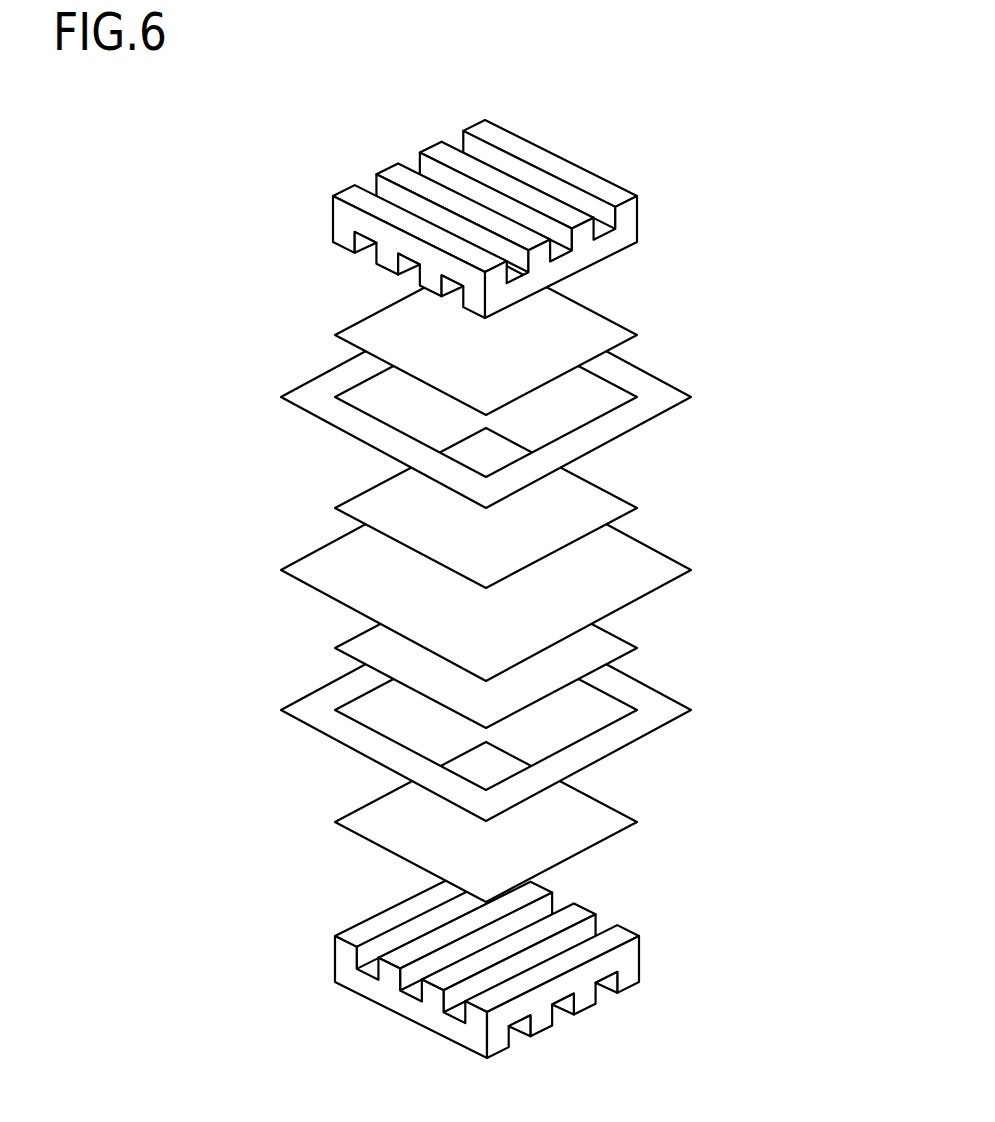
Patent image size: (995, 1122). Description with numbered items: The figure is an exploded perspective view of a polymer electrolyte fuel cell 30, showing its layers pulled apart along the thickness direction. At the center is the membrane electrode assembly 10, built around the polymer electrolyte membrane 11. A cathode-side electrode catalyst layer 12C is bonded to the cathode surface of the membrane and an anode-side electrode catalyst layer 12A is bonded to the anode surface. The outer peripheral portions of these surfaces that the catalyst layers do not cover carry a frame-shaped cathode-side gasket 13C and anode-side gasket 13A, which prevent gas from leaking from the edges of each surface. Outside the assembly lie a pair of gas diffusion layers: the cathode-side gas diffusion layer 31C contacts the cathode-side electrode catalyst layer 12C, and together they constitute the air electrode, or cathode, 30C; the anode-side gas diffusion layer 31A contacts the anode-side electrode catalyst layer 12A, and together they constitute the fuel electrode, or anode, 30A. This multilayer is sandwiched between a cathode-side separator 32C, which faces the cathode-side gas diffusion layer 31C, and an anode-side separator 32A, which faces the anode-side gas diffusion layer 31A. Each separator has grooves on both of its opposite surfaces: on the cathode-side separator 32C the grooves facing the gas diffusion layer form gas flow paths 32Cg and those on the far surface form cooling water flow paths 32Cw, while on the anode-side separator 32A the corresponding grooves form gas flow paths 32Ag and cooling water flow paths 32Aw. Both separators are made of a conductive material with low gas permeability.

The membrane electrode assembly 10 is at (481, 553).
The polymer electrolyte membrane 11 is at (673, 560).
The cathode-side electrode catalyst layer 12C is at (638, 508).
The anode-side electrode catalyst layer 12A is at (638, 648).
The cathode-side gasket 13C is at (306, 412).
The anode-side gasket 13A is at (306, 725).
The polymer electrolyte fuel cell 30 is at (515, 566).
The air electrode (cathode) 30C is at (589, 341).
The fuel electrode (anode) 30A is at (589, 785).
The cathode-side gas diffusion layer 31C is at (640, 334).
The anode-side gas diffusion layer 31A is at (638, 822).
The cathode-side separator 32C is at (516, 196).
The anode-side separator 32A is at (451, 959).
The cooling water flow paths 32Cw is at (461, 134).
The gas flow paths 32Cg is at (368, 246).
The cooling water flow paths 32Aw is at (608, 980).
The gas flow paths 32Ag is at (373, 968).